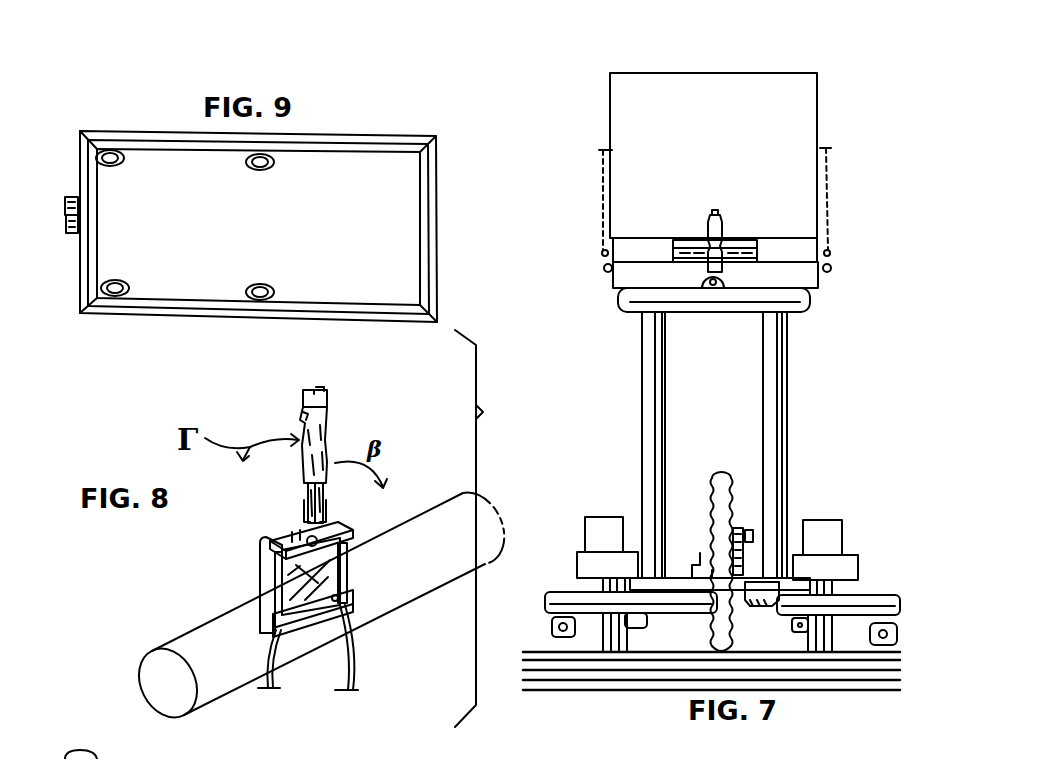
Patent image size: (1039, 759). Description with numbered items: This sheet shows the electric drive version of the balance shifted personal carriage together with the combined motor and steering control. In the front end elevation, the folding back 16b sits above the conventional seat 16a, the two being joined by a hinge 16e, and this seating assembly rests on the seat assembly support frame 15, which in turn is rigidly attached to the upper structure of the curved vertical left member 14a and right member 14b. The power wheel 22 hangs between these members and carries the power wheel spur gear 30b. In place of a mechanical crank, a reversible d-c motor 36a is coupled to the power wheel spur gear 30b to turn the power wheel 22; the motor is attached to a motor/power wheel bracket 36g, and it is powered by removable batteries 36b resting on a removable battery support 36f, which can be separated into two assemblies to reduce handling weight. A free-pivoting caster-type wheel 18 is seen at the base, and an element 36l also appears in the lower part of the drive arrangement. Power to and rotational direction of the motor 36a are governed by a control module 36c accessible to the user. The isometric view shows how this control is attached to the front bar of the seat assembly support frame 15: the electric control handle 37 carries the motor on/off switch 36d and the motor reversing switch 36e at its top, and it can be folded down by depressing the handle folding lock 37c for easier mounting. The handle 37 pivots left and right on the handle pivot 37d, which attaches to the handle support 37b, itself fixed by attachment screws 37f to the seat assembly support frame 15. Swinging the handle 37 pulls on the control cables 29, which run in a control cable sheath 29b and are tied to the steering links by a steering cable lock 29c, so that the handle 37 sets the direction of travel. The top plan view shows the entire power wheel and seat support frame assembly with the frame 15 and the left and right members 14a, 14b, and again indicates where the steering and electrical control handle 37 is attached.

In FIG. 9, the curved vertical left member 14a is at (252, 287).
In FIG. 7, the curved vertical left member 14a is at (773, 351).
In FIG. 9, the curved vertical right member 14b is at (123, 158).
In FIG. 7, the curved vertical right member 14b is at (650, 409).
In FIG. 9, the seat assembly support frame 15 is at (435, 257).
In FIG. 8, the seat assembly support frame 15 is at (408, 592).
In FIG. 7, the seat assembly support frame 15 is at (797, 310).
In FIG. 7, the seat 16a is at (790, 280).
In FIG. 7, the folding back 16b is at (797, 130).
In FIG. 7, the hinge 16e is at (725, 242).
In FIG. 7, the free-pivoting caster-type wheel 18 is at (553, 632).
In FIG. 7, the power wheel 22 is at (728, 491).
In FIG. 8, the control cable 29 is at (287, 578).
In FIG. 8, the control cable sheath 29b is at (273, 690).
In FIG. 8, the steering cable lock 29c is at (263, 540).
In FIG. 7, the power wheel spur gear 30b is at (733, 545).
In FIG. 7, the reversible d-c motor 36a is at (757, 597).
In FIG. 8, the removable battery 36b is at (521, 758).
In FIG. 7, the removable battery 36b is at (597, 527).
In FIG. 9, the control module 36c is at (65, 203).
In FIG. 8, the control module 36c is at (505, 528).
In FIG. 8, the motor on/off switch 36d is at (322, 390).
In FIG. 8, the motor reversing switch 36e is at (310, 413).
In FIG. 8, the removable battery support 36f is at (137, 749).
In FIG. 7, the removable battery support 36f is at (587, 567).
In FIG. 7, the motor/power wheel bracket 36g is at (705, 575).
In FIG. 7, the carriage plate 36l is at (797, 590).
In FIG. 9, the electric control handle 37 is at (63, 233).
In FIG. 8, the electric control handle 37 is at (323, 447).
In FIG. 7, the electric control handle 37 is at (707, 232).
In FIG. 8, the handle support 37b is at (277, 567).
In FIG. 7, the handle support 37b is at (717, 288).
In FIG. 8, the handle folding lock 37c is at (303, 503).
In FIG. 8, the handle pivot 37d is at (343, 547).
In FIG. 8, the attachment screw 37f is at (350, 690).